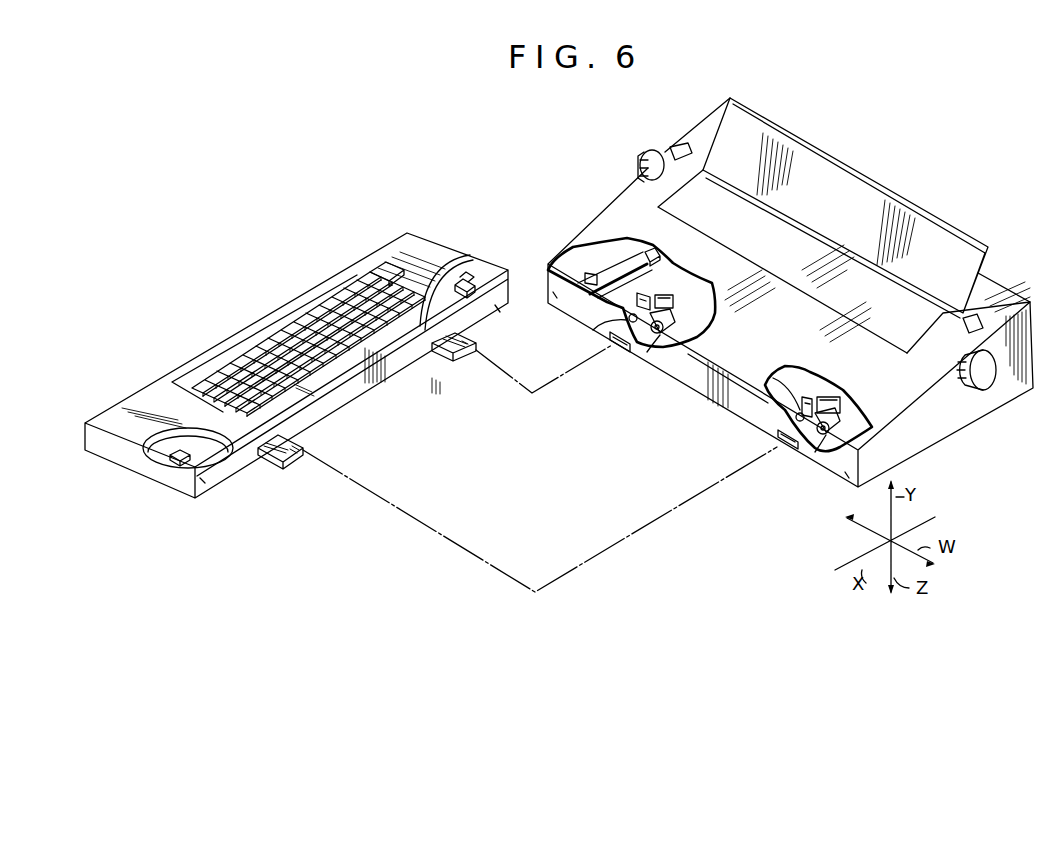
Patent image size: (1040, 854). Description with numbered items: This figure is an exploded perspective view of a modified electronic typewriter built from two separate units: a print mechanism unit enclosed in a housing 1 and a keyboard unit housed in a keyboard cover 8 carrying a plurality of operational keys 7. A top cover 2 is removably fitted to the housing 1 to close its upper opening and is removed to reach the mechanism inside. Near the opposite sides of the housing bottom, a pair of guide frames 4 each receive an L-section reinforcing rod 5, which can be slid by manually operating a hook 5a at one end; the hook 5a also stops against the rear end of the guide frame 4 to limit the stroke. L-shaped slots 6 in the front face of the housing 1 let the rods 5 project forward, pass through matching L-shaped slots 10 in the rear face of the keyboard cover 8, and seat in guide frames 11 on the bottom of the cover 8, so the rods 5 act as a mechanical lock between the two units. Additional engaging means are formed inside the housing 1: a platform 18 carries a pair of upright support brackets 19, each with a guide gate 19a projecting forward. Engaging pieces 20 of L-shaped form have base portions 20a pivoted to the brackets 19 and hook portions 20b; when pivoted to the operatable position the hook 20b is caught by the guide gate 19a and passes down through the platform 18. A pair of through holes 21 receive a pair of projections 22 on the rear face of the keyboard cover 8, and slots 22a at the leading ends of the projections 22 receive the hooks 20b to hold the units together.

The housing 1 is at (960, 430).
The top cover 2 is at (907, 380).
The guide frame 4 is at (593, 273).
The reinforcing rod 5 is at (637, 268).
The hook 5a is at (657, 252).
The L-shaped slot 6 is at (549, 289).
The operational keys 7 is at (253, 338).
The keyboard cover 8 is at (443, 249).
The L-shaped slot 10 is at (205, 480).
The guide frame 11 is at (178, 458).
The platform 18 is at (690, 283).
The upright support bracket 19 is at (638, 302).
The guide gate 19a is at (605, 327).
The engaging piece 20 is at (677, 315).
The base portion 20a is at (662, 332).
The hook portion 20b is at (670, 299).
The through hole 21 is at (620, 353).
The projection 22 is at (276, 461).
The slot 22a is at (305, 447).